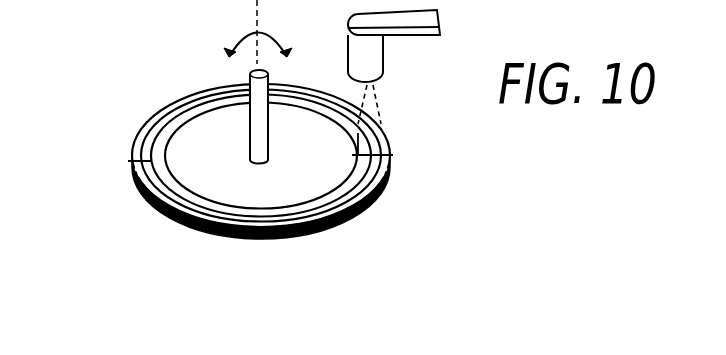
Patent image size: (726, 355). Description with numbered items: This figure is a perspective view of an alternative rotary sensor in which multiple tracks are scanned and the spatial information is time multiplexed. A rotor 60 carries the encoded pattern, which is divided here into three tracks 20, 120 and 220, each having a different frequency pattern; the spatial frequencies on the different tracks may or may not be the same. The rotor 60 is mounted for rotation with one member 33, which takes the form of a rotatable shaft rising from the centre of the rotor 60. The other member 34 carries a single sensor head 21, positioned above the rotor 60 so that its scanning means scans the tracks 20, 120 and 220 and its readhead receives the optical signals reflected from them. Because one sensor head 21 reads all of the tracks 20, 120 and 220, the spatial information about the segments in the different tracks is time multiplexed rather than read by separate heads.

The track 20 is at (156, 195).
The rotor 60 is at (363, 210).
The track 220 is at (150, 131).
The track 120 is at (151, 163).
The member 33 is at (250, 92).
The member 34 is at (407, 28).
The sensor head 21 is at (375, 65).